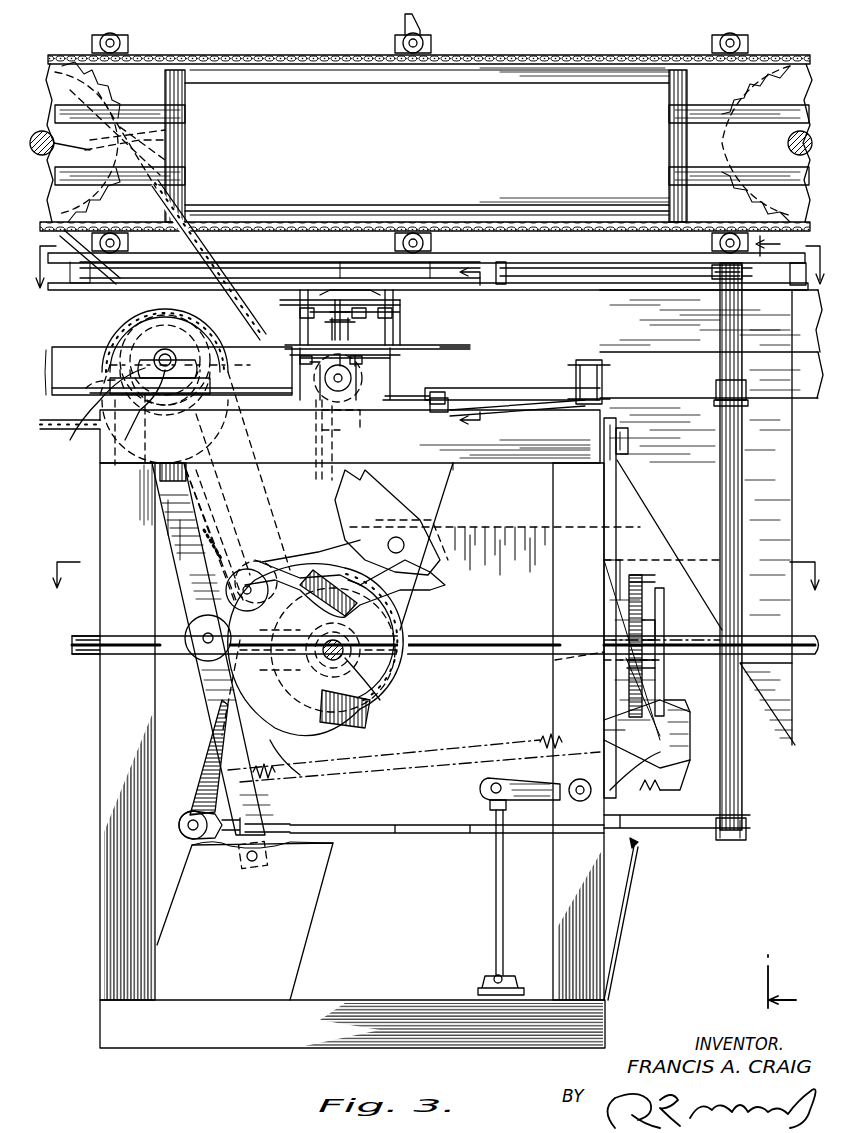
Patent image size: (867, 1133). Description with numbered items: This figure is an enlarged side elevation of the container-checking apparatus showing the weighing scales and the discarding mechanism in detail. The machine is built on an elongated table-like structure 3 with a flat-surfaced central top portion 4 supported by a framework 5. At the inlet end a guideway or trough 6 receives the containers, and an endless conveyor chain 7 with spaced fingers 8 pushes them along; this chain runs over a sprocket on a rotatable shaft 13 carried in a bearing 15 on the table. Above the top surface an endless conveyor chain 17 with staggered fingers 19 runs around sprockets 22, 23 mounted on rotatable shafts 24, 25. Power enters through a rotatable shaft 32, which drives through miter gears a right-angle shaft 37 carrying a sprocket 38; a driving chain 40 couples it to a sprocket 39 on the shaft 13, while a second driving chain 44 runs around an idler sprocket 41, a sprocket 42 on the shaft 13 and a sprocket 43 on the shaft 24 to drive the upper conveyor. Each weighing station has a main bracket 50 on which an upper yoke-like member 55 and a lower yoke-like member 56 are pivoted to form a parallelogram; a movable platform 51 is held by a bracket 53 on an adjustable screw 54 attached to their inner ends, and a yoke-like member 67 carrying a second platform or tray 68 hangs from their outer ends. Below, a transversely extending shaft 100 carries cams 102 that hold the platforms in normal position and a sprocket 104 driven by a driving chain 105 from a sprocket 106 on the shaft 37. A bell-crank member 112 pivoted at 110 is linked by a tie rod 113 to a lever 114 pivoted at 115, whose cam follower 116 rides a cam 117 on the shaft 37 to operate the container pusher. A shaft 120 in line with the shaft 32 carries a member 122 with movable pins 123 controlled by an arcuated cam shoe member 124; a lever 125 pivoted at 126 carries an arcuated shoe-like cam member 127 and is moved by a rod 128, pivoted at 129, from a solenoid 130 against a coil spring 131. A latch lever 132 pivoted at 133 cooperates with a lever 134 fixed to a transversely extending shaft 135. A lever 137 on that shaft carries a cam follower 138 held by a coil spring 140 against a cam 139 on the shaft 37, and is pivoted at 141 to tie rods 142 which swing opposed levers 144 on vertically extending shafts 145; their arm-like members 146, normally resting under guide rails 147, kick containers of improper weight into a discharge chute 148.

The table-like structure 3 is at (793, 388).
The flat-surfaced central top portion 4 is at (322, 918).
The framework 5 is at (84, 860).
The guideway or trough 6 is at (783, 622).
The endless conveyor chain 7 is at (434, 587).
The fingers 8 is at (43, 370).
The rotatable shaft 13 is at (147, 401).
The bearing 15 is at (92, 409).
The endless conveyor chain 17 is at (292, 55).
The fingers 19 is at (122, 35).
The sprocket 22 is at (64, 70).
The sprocket 23 is at (776, 78).
The rotatable shaft 24 is at (118, 155).
The rotatable shaft 25 is at (788, 143).
The rotatable shaft 32 is at (84, 654).
The shaft 37 is at (385, 698).
The sprocket 38 is at (393, 620).
The sprocket 39 is at (120, 332).
The driving chain 40 is at (395, 672).
The idler sprocket 41 is at (248, 452).
The sprocket 42 is at (110, 362).
The sprocket 43 is at (120, 138).
The driving chain 44 is at (190, 236).
The main bracket 50 is at (380, 338).
The movable platform 51 is at (296, 290).
The bracket 53 is at (360, 300).
The adjustable screw 54 is at (378, 298).
The upper yoke-like member 55 is at (360, 305).
The lower yoke-like member 56 is at (360, 366).
The yoke-like member 67 is at (352, 330).
The second platform or tray 68 is at (440, 347).
The transversely extending shaft 100 is at (340, 386).
The cams 102 is at (395, 372).
The sprocket 104 is at (338, 440).
The driving chain 105 is at (345, 527).
The sprocket 106 is at (365, 712).
The pivot 110 is at (604, 374).
The bell-crank member 112 is at (520, 398).
The tie rod 113 is at (548, 410).
The lever 114 is at (208, 684).
The pivot 115 is at (255, 868).
The cam follower 116 is at (190, 628).
The cam 117 is at (310, 776).
The shaft 120 is at (770, 636).
The member 122 is at (642, 680).
The movable pins 123 is at (670, 572).
The arcuated cam shoe member 124 is at (604, 658).
The lever 125 is at (662, 760).
The pivot 126 is at (580, 802).
The arcuated shoe-like cam member 127 is at (664, 624).
The rod 128 is at (496, 890).
The pivot 129 is at (486, 788).
The solenoid 130 is at (510, 995).
The coil spring 131 is at (636, 848).
The latch lever 132 is at (612, 502).
The pivot 133 is at (630, 432).
The lever 134 is at (490, 532).
The transversely extending shaft 135 is at (400, 537).
The lever 137 is at (255, 575).
The cam follower 138 is at (238, 585).
The cam 139 is at (335, 726).
The coil spring 140 is at (275, 778).
The pivot 141 is at (190, 815).
The tie rods 142 is at (390, 834).
The opposed levers 144 is at (750, 835).
The vertically extending shafts 145 is at (742, 494).
The arm-like members 146 is at (604, 268).
The guide rails 147 is at (622, 268).
The discharge chute 148 is at (668, 530).